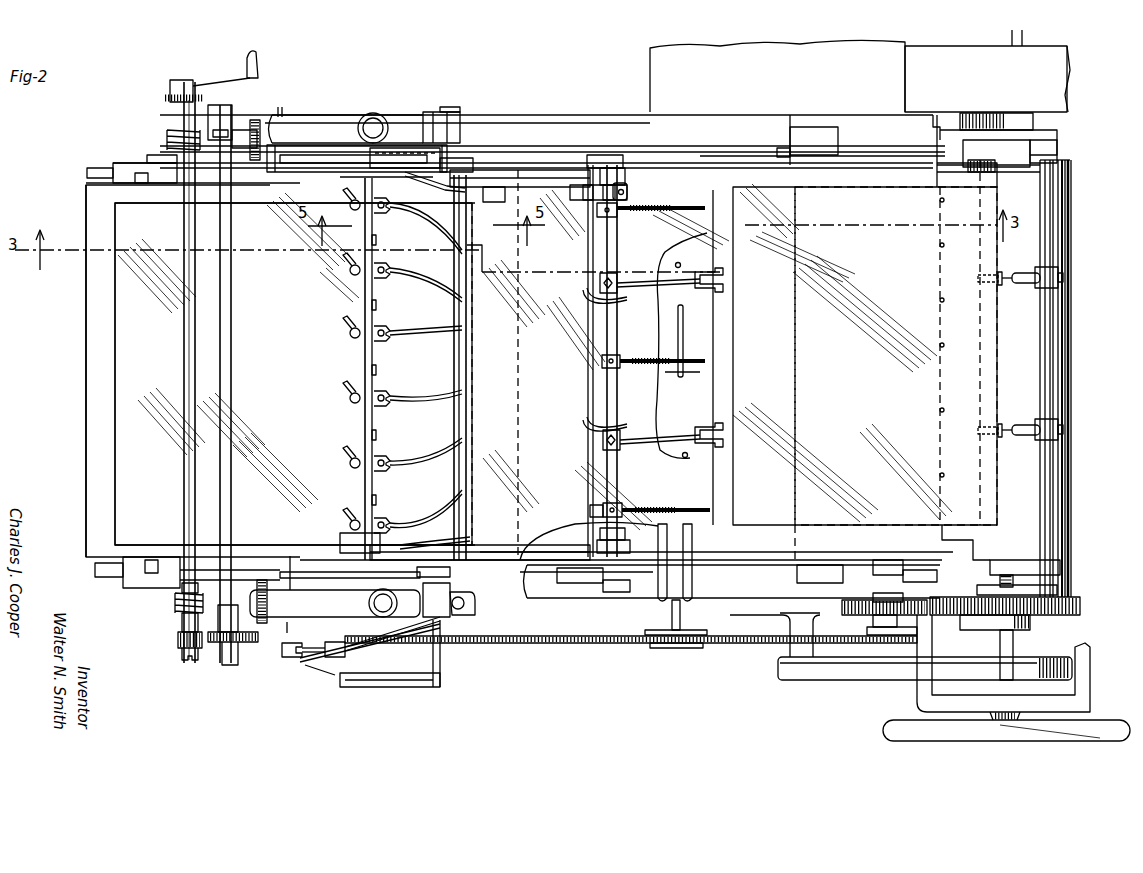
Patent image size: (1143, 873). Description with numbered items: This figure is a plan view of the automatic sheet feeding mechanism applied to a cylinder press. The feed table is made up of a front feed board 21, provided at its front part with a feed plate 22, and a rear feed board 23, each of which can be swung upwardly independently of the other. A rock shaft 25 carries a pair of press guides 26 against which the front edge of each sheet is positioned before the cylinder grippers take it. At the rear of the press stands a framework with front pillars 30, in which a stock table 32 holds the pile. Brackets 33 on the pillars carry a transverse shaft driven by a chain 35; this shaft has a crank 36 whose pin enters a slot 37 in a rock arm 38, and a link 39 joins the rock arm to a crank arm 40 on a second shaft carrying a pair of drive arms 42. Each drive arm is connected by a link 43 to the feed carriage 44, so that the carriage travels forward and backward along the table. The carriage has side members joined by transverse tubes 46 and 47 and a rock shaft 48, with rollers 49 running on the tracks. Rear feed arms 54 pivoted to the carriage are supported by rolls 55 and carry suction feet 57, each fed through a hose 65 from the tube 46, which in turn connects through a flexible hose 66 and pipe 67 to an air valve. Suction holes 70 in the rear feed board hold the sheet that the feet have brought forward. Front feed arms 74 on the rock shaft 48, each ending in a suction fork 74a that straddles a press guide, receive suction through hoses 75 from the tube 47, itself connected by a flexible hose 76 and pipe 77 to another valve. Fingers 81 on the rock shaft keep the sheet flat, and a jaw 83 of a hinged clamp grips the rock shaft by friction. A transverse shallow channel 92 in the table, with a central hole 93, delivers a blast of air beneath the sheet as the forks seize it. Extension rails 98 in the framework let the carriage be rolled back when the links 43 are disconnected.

The front feed board 21 is at (852, 175).
The feed plate 22 is at (965, 178).
The rear feed board 23 is at (722, 182).
The rock shaft 25 is at (1050, 320).
The press guides 26 is at (1003, 267).
The front pillars 30 is at (375, 125).
The stock table 32 is at (98, 497).
The brackets 33 is at (462, 121).
The chain 35 is at (513, 645).
The crank 36 is at (338, 678).
The slot 37 is at (380, 686).
The rock arm 38 is at (320, 668).
The link 39 is at (315, 644).
The crank arm 40 is at (362, 634).
The drive arms 42 is at (298, 149).
The links 43 is at (298, 185).
The feed carriage 44 is at (522, 170).
The transverse tube 46 is at (468, 371).
The transverse tube 47 is at (587, 462).
The rock shaft 48 is at (617, 463).
The rollers 49 is at (465, 158).
The rear feed arms 54 is at (424, 187).
The roll 55 is at (437, 162).
The suction feet 57 is at (360, 377).
The hose 65 is at (440, 280).
The flexible hose 66 is at (571, 518).
The pipe 67 is at (658, 590).
The suction holes 70 is at (680, 262).
The front feed arms 74 is at (649, 257).
The suction fork 74a is at (723, 282).
The hose 75 is at (582, 303).
The flexible hose 76 is at (633, 504).
The pipe 77 is at (688, 586).
The fingers 81 is at (657, 206).
The jaw 83 is at (624, 192).
The transverse shallow channel 92 is at (690, 330).
The hole 93 is at (700, 371).
The extension rails 98 is at (120, 163).